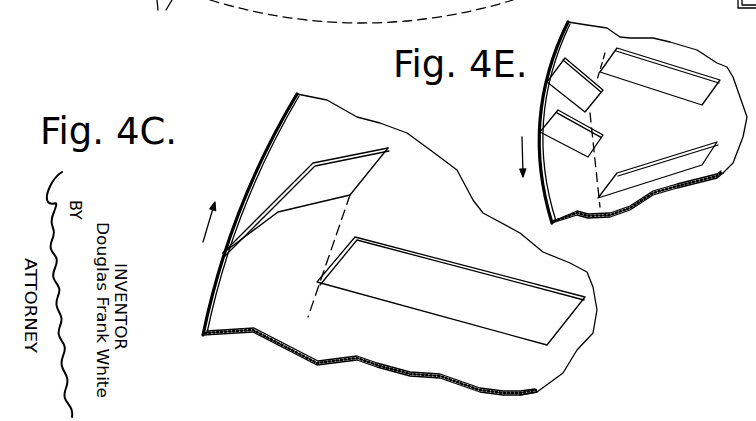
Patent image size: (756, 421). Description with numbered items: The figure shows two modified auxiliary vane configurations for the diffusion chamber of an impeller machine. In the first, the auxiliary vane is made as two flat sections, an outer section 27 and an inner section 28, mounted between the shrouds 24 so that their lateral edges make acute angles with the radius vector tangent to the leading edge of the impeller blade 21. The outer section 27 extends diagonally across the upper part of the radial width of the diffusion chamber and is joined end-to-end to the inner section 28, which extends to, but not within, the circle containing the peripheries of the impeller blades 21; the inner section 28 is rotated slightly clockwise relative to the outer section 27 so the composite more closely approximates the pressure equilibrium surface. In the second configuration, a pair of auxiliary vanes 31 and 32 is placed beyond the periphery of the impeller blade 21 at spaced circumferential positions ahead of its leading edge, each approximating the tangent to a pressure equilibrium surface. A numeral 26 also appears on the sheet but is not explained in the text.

In FIG. 4C, the impeller blade 21 is at (555, 288).
In FIG. 4E, the impeller blade 21 is at (663, 62).
In FIG. 4C, the shroud 24 is at (207, 297).
In FIG. 4C, the cutout edge 26 is at (157, 17).
In FIG. 4C, the outer section 27 is at (273, 193).
In FIG. 4C, the inner section 28 is at (367, 148).
In FIG. 4E, the auxiliary vane 31 is at (540, 118).
In FIG. 4E, the auxiliary vane 32 is at (552, 64).